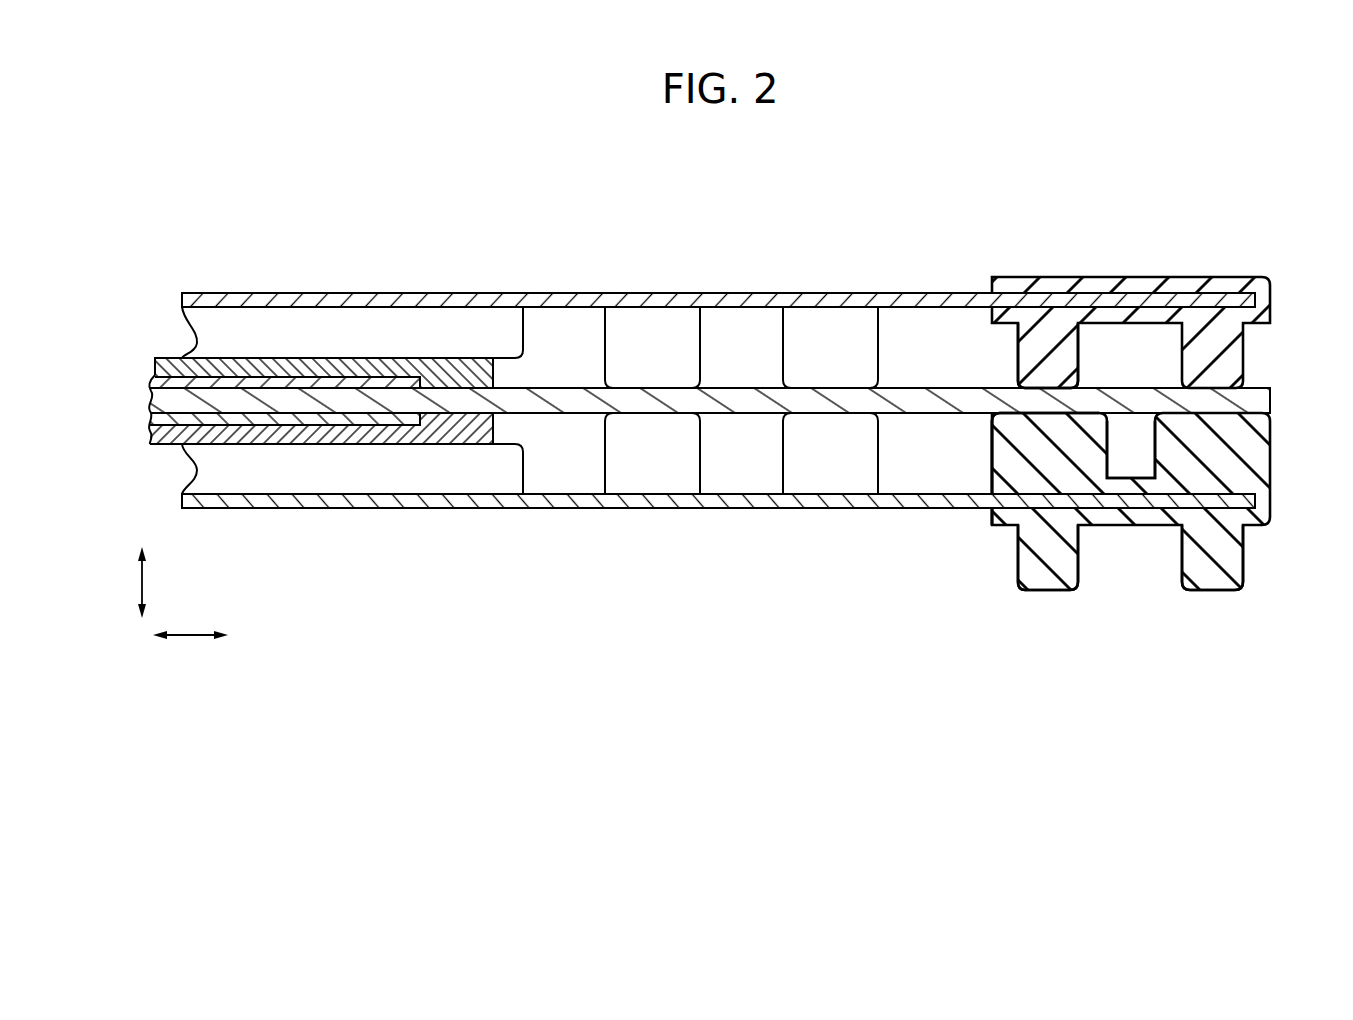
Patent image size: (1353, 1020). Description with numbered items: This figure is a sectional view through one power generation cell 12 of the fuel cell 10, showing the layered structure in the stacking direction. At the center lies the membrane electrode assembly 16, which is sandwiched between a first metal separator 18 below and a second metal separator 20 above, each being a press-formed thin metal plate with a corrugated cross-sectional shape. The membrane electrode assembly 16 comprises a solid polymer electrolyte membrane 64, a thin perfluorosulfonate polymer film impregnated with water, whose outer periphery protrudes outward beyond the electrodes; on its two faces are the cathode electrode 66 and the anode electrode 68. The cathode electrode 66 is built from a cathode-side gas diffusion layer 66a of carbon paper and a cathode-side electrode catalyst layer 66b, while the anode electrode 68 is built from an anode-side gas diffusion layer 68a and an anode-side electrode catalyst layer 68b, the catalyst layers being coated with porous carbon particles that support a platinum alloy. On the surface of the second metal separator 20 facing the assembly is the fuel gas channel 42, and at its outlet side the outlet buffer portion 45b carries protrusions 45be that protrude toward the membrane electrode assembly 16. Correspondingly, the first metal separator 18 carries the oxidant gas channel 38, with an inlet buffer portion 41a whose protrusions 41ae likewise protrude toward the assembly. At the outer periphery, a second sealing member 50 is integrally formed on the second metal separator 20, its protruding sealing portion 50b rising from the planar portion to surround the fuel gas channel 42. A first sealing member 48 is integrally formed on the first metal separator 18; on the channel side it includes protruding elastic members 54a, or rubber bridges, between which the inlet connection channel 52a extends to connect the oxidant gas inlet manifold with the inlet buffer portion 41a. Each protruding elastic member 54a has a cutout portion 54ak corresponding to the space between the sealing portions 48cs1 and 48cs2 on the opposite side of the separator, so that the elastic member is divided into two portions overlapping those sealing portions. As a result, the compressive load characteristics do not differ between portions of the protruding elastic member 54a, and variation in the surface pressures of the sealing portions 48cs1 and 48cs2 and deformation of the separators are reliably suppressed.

The fuel cell 10 is at (820, 141).
The power generation cell 12 is at (84, 268).
The membrane electrode assembly 16 is at (148, 400).
The first metal separator 18 is at (672, 501).
The second metal separator 20 is at (671, 309).
The oxidant gas channel 38 is at (637, 501).
The inlet buffer portion 41a is at (757, 475).
The protrusions 41ae is at (858, 475).
The fuel gas channel 42 is at (639, 309).
The outlet buffer portion 45b is at (763, 333).
The protrusions 45be is at (860, 333).
The first sealing member 48 is at (1097, 533).
The sealing portion 48cs1 is at (1043, 574).
The sealing portion 48cs2 is at (1213, 574).
The second sealing member 50 is at (1151, 298).
The protruding sealing portion 50b is at (1052, 358).
The inlet connection channel 52a is at (981, 440).
The protruding elastic member 54a is at (1006, 461).
The cutout portion 54ak is at (1133, 466).
The solid polymer electrolyte membrane 64 is at (570, 400).
The cathode electrode 66 is at (321, 514).
The cathode-side gas diffusion layer 66a is at (364, 441).
The cathode-side electrode catalyst layer 66b is at (303, 427).
The anode electrode 68 is at (321, 292).
The anode-side gas diffusion layer 68a is at (365, 362).
The anode-side electrode catalyst layer 68b is at (303, 371).